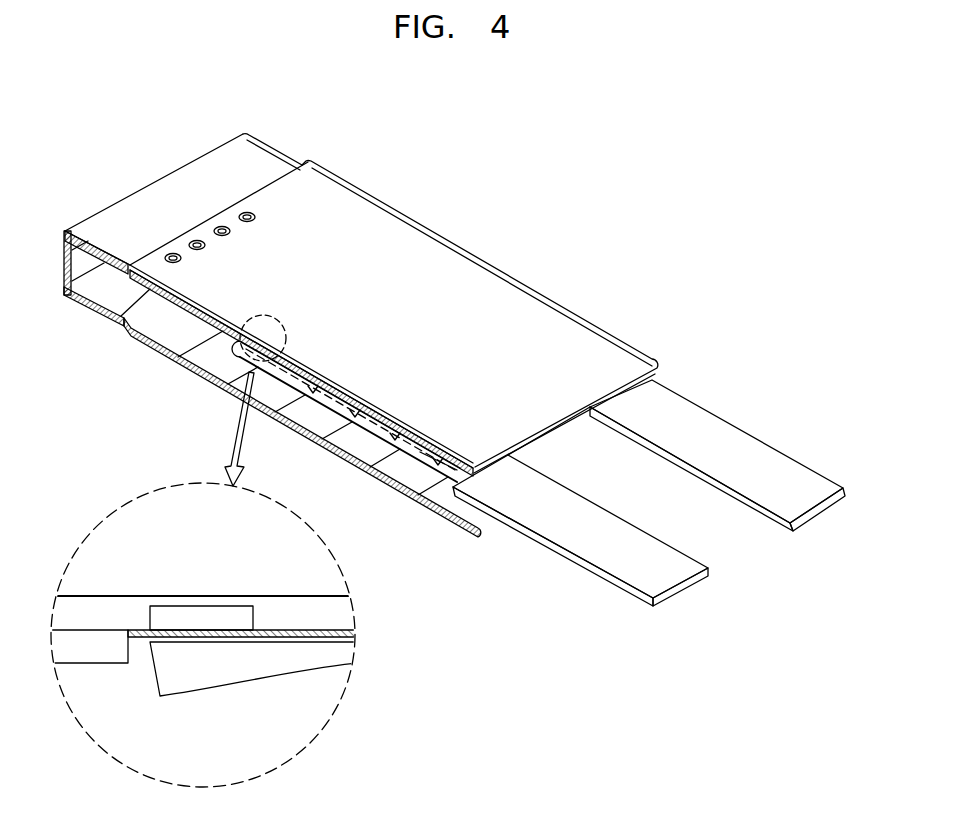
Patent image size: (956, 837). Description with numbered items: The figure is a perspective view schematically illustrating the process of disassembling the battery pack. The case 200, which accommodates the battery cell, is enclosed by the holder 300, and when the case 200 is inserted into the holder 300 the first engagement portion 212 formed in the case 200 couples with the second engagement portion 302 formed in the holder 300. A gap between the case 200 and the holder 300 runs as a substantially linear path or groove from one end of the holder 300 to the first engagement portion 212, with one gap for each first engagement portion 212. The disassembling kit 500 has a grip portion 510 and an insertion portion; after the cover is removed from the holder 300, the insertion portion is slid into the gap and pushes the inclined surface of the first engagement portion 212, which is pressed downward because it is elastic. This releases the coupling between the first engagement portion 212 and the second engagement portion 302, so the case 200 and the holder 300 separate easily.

The case 200 is at (166, 202).
The first engagement portion 212 is at (183, 680).
The holder 300 is at (458, 285).
The second engagement portion 302 is at (203, 606).
The disassembling kit 500 is at (696, 604).
The grip portion 510 is at (578, 538).